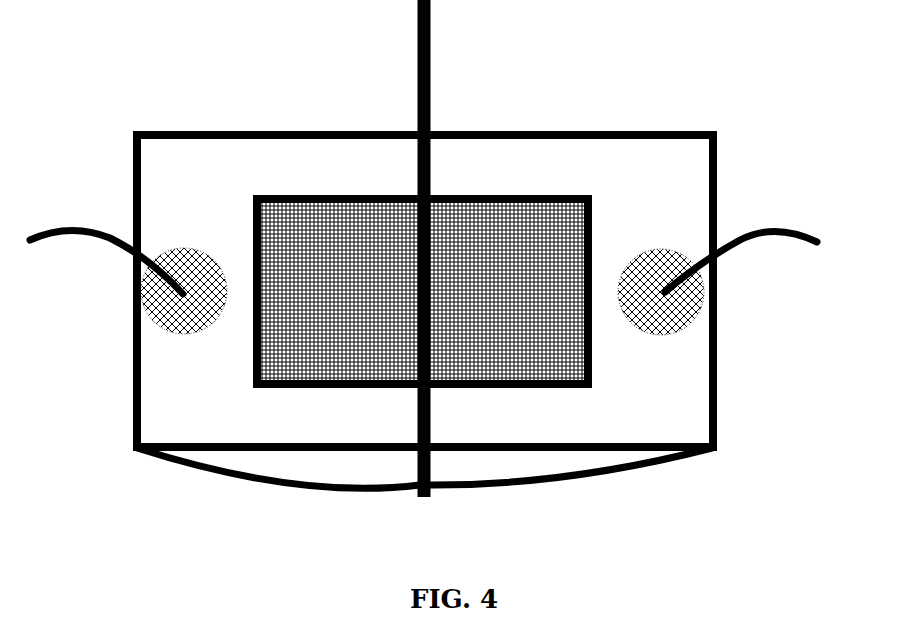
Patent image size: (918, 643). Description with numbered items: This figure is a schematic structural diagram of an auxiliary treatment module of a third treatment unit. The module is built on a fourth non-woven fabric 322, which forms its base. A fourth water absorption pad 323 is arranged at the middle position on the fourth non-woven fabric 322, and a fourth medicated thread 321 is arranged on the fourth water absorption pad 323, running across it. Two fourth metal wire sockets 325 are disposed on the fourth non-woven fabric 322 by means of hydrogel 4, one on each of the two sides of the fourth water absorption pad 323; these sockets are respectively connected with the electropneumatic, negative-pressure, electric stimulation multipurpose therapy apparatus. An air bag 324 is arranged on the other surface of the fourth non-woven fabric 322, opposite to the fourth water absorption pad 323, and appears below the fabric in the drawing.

The fourth medicated thread 321 is at (430, 90).
The fourth non-woven fabric 322 is at (483, 155).
The fourth water absorption pad 323 is at (540, 245).
The air bag 324 is at (510, 467).
The fourth metal wire socket 325 is at (60, 222).
The hydrogel 4 is at (185, 318).